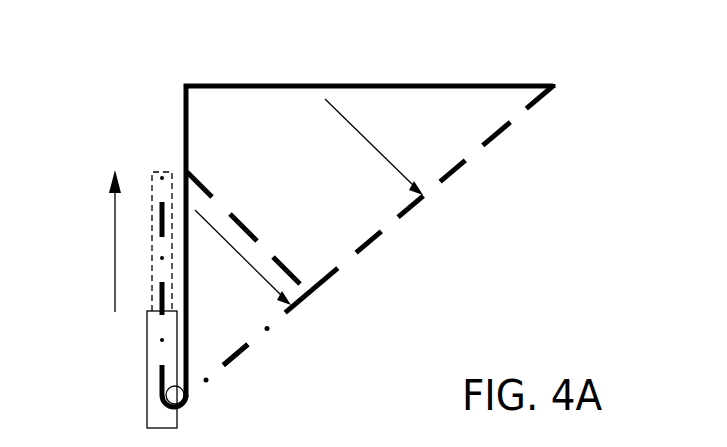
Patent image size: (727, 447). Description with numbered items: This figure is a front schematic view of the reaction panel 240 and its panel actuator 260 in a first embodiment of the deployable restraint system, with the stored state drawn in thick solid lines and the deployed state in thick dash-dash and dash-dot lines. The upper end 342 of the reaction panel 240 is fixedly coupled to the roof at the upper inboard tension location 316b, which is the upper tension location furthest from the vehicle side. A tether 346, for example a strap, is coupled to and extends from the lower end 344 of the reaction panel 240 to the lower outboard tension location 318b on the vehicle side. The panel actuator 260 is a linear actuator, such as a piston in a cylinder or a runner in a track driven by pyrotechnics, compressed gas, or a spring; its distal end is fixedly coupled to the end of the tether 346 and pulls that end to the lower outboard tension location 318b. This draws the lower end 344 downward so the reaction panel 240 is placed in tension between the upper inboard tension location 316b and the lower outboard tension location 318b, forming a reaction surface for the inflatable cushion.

The upper end 342 is at (392, 96).
The upper inboard tension location 316b is at (555, 86).
The reaction panel 240 is at (458, 168).
The lower end 344 is at (313, 280).
The tether 346 is at (248, 346).
The panel actuator 260 is at (147, 374).
The lower outboard tension location 318b is at (184, 390).